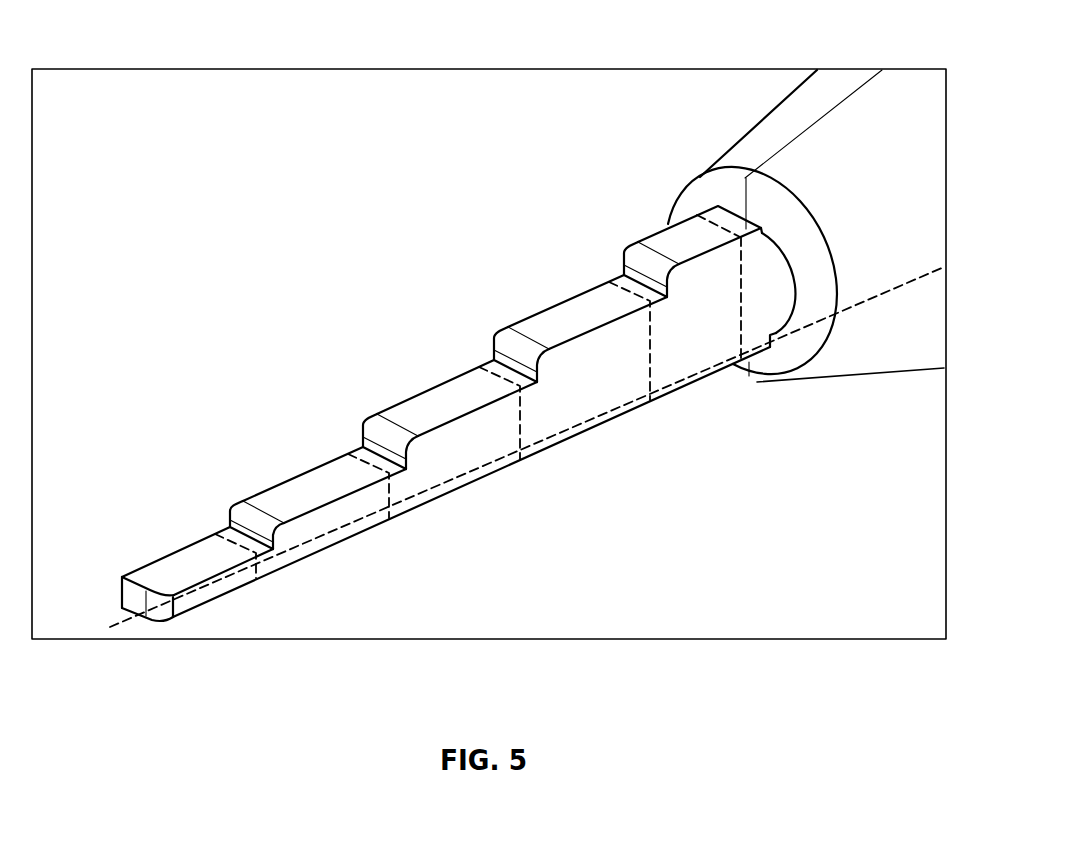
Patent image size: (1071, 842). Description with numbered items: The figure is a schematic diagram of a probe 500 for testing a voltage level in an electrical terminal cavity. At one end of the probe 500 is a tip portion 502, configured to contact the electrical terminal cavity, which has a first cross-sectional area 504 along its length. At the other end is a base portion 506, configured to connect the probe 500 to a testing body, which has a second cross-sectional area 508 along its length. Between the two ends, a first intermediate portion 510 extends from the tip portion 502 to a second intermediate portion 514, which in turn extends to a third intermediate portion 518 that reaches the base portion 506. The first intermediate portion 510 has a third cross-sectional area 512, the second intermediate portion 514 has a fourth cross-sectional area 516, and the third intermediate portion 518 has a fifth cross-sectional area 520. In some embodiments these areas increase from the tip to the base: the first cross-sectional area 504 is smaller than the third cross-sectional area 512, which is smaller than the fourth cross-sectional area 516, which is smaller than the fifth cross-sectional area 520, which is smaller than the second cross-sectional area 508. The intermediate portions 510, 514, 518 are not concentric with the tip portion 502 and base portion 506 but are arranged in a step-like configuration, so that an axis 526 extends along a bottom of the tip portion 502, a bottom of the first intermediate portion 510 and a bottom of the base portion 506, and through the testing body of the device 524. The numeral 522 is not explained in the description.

The probe 500 is at (207, 43).
The tip portion 502 is at (150, 560).
The first cross-sectional area 504 is at (258, 580).
The base portion 506 is at (650, 226).
The second cross-sectional area 508 is at (754, 362).
The first intermediate portion 510 is at (268, 478).
The third cross-sectional area 512 is at (393, 520).
The second intermediate portion 514 is at (396, 397).
The fourth cross-sectional area 516 is at (527, 463).
The third intermediate portion 518 is at (521, 318).
The fifth cross-sectional area 520 is at (652, 405).
The bottom corner of tip 522 is at (153, 617).
The device 524 is at (712, 160).
The axis 526 is at (122, 627).